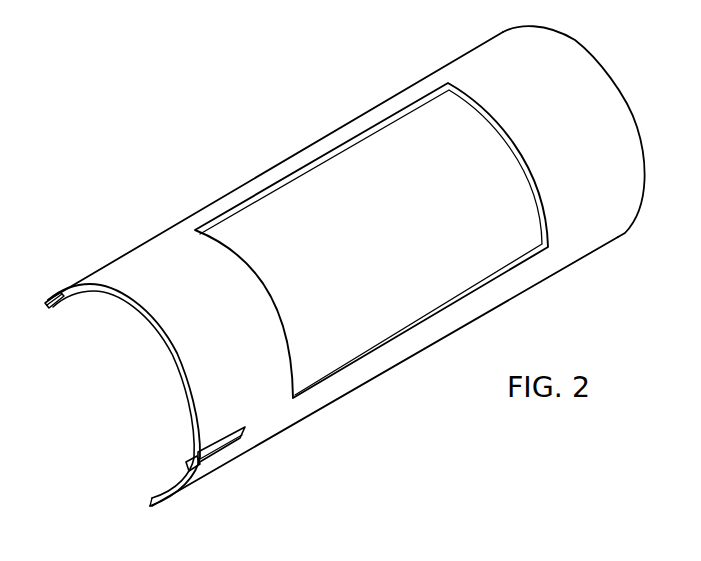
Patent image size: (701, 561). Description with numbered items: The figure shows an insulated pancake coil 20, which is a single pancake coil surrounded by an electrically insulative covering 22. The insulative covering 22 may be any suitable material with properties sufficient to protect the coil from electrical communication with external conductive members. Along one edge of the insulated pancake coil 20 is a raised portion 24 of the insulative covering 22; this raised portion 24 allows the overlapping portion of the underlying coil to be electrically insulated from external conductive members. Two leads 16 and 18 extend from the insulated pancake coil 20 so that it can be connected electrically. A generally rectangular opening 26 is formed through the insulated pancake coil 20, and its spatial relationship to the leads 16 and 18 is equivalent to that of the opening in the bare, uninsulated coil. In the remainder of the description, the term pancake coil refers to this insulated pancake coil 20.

The lead 16 is at (47, 299).
The lead 18 is at (186, 467).
The insulated pancake coil 20 is at (294, 120).
The insulative covering 22 is at (360, 382).
The raised portion 24 is at (230, 448).
The rectangular opening 26 is at (355, 141).